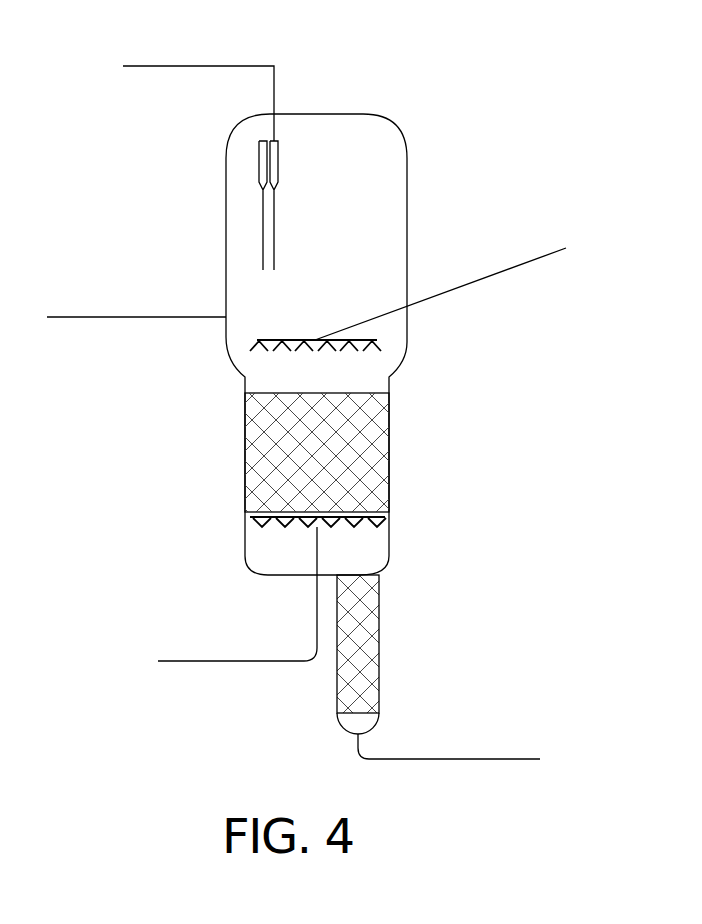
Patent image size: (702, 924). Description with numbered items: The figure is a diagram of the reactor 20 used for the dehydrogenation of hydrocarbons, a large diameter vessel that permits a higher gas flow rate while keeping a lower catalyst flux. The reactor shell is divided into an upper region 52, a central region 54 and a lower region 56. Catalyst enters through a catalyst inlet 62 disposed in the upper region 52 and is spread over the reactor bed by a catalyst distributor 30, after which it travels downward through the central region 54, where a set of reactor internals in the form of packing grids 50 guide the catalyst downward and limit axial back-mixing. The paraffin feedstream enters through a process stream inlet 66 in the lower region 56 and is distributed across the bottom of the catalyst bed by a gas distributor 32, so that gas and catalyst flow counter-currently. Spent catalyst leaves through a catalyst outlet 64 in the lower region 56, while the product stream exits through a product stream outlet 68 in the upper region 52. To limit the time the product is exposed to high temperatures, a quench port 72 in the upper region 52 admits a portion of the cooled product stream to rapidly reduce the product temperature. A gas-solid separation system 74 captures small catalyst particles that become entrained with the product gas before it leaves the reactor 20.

The reactor 20 is at (408, 155).
The catalyst distributor 30 is at (272, 340).
The gas distributor 32 is at (277, 527).
The packing grids 50 is at (373, 415).
The upper region 52 is at (355, 211).
The central region 54 is at (332, 463).
The lower region 56 is at (365, 562).
The catalyst inlet 62 is at (408, 305).
The catalyst outlet 64 is at (365, 733).
The process stream inlet 66 is at (317, 583).
The product stream outlet 68 is at (276, 112).
The quench port 72 is at (226, 312).
The gas-solid separation system 74 is at (259, 165).